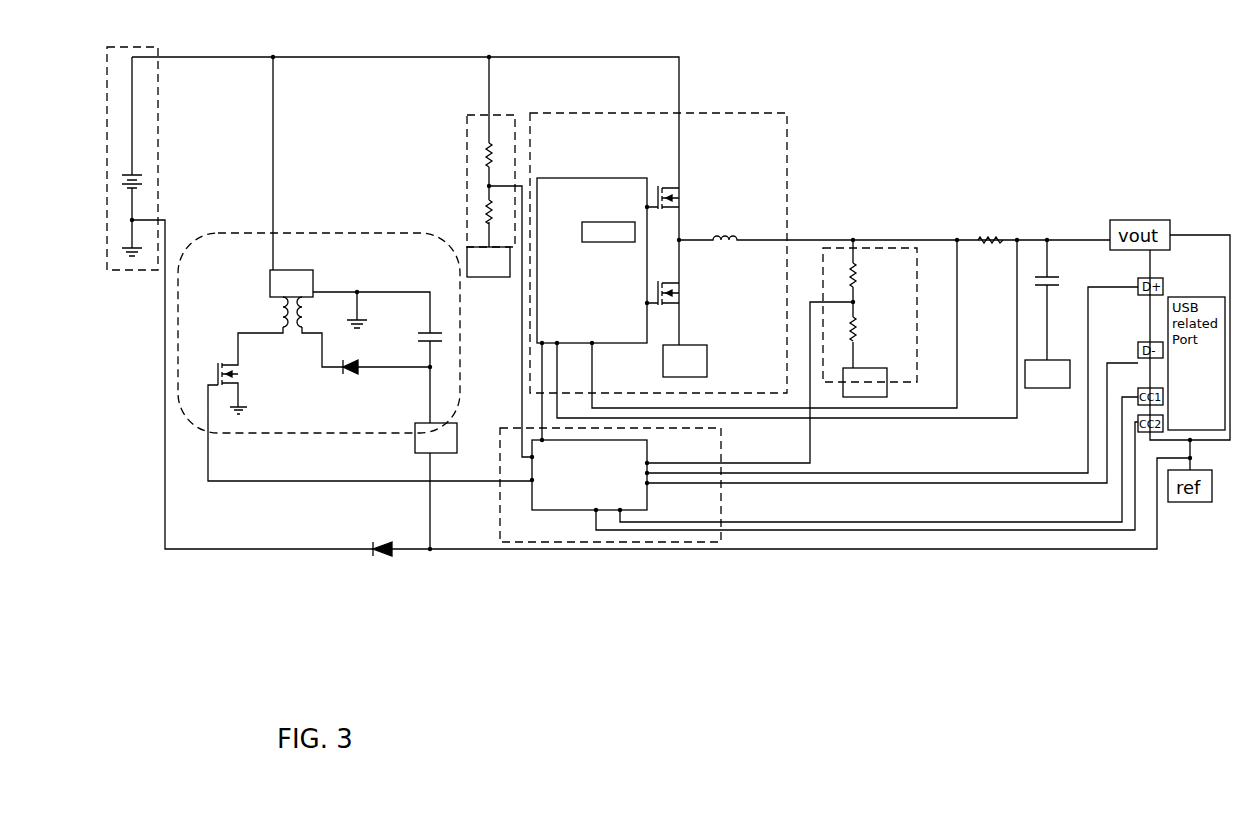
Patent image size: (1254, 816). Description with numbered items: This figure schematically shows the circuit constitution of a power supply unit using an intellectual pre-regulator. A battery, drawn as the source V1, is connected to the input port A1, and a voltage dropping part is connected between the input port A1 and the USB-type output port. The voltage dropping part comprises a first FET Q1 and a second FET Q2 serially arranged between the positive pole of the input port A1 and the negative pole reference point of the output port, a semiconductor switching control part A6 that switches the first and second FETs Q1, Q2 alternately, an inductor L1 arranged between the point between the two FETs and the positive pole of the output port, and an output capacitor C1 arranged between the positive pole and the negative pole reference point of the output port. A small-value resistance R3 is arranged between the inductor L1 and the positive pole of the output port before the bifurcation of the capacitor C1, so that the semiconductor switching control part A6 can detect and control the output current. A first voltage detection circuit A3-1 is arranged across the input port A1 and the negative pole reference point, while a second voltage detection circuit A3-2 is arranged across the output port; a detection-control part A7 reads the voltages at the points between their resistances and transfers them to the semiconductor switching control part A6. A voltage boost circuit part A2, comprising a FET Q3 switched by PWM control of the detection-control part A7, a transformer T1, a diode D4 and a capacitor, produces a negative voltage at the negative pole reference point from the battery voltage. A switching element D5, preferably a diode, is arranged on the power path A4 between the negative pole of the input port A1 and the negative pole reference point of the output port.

The input port A1 is at (167, 158).
The battery voltage source V1 is at (154, 203).
The voltage boost circuit part A2 is at (355, 376).
The transformer T1 is at (292, 298).
The FET Q3 is at (362, 400).
The diode D4 is at (333, 385).
The first voltage detection circuit A3-1 is at (449, 257).
The semiconductor switching control part A6 is at (820, 276).
The first FET Q1 is at (690, 173).
The second FET Q2 is at (690, 292).
The inductor L1 is at (893, 219).
The second voltage detection circuit A3-2 is at (797, 350).
The resistance R3 is at (992, 193).
The output capacitor C1 is at (1050, 313).
The detection-control part A7 is at (610, 485).
The power path A4 is at (446, 577).
The switching element D5 is at (371, 568).